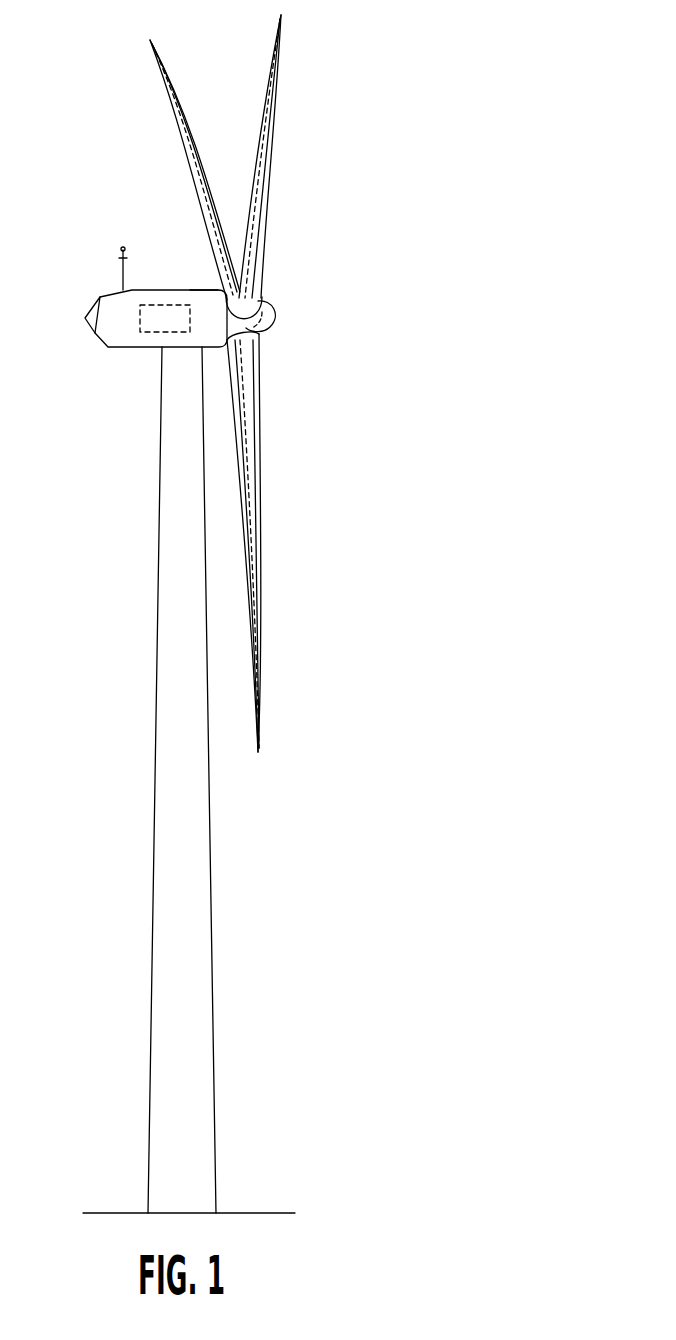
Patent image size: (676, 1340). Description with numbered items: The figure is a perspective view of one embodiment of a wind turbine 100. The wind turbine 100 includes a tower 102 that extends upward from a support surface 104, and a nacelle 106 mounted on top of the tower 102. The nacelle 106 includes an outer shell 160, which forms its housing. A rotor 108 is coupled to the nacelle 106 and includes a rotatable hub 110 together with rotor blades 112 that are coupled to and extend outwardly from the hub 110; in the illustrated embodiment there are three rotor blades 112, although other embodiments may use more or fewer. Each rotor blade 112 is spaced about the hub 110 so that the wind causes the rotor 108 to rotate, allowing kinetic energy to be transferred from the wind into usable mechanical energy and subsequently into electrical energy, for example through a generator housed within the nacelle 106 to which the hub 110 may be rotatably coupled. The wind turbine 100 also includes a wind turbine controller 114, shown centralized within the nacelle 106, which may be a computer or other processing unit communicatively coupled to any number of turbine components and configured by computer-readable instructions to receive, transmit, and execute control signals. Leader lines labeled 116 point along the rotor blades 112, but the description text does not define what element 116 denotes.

The wind turbine 100 is at (417, 120).
The tower 102 is at (193, 850).
The support surface 104 is at (127, 1212).
The nacelle 106 is at (132, 348).
The rotor 108 is at (312, 277).
The rotatable hub 110 is at (275, 312).
The rotor blades 112 is at (263, 130).
The turbine controller 114 is at (160, 305).
The blade structural component 116 is at (195, 190).
The sensor system 160 is at (207, 300).